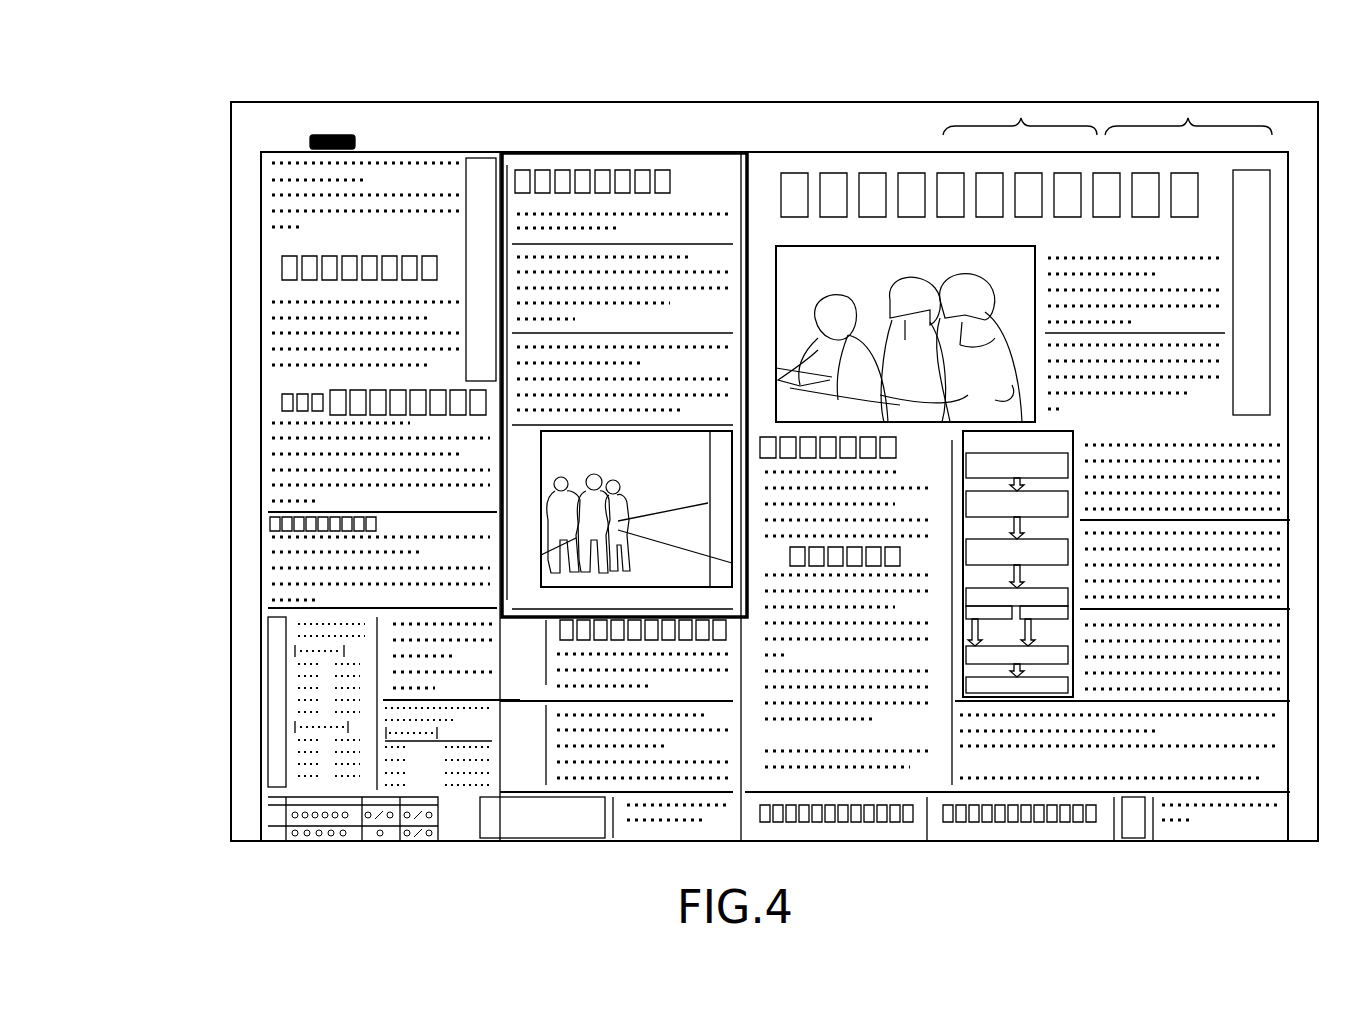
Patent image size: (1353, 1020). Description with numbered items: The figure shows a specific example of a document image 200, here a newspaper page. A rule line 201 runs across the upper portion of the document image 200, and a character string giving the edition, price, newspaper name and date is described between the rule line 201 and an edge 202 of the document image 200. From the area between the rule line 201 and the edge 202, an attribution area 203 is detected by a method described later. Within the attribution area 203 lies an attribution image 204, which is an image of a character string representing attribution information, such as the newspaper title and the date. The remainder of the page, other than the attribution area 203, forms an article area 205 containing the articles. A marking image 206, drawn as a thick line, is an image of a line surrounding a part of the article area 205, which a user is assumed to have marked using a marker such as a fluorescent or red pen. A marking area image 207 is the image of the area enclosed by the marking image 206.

The document image 200 is at (155, 118).
The rule line 201 is at (1278, 148).
The edge 202 is at (276, 100).
The attribution area 203 is at (291, 125).
The attribution image 204 is at (1021, 118).
The article area 205 is at (291, 242).
The marking image 206 is at (578, 152).
The marking area image 207 is at (698, 192).